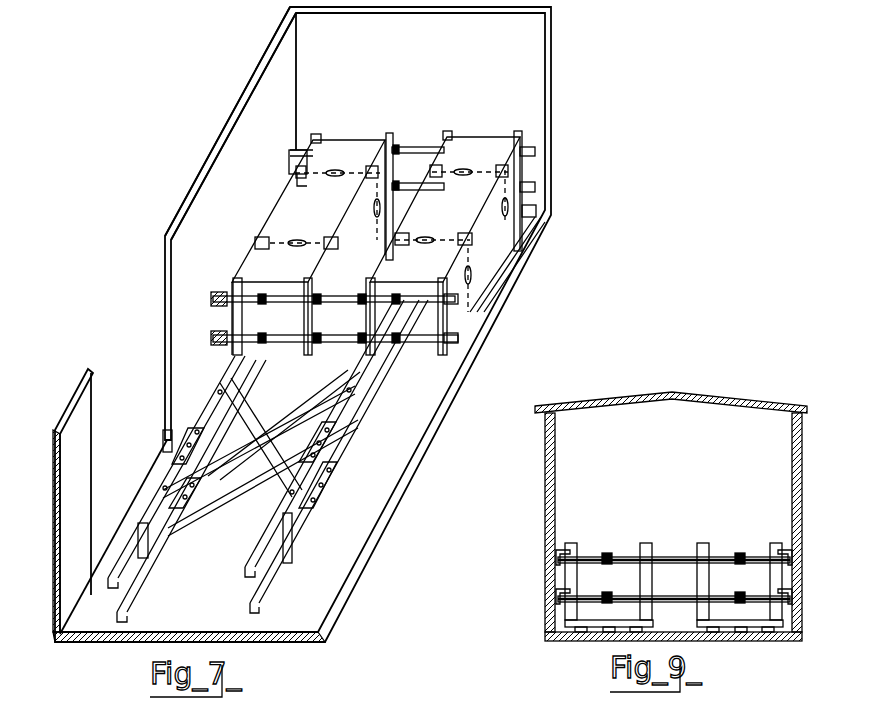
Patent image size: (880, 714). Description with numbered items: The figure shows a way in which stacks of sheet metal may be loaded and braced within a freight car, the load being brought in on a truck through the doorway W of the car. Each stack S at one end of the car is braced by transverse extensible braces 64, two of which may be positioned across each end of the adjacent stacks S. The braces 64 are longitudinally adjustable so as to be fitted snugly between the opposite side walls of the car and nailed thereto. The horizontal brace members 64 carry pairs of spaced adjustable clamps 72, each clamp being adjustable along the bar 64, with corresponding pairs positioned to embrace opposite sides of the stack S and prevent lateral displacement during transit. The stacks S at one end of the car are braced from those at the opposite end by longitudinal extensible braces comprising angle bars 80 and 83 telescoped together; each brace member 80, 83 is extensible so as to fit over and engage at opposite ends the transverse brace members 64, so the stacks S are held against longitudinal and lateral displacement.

In FIG. 7, the transverse extensible brace 64 is at (397, 186).
In FIG. 7, the adjustable clamp 72 is at (397, 152).
In FIG. 9, the adjustable clamp 72 is at (667, 563).
In FIG. 7, the angle bar 80 is at (211, 404).
In FIG. 9, the angle bar 80 is at (607, 563).
In FIG. 7, the angle bar 83 is at (150, 514).
In FIG. 7, the stack S is at (376, 246).
In FIG. 9, the stack S is at (625, 543).
In FIG. 7, the doorway W is at (118, 406).